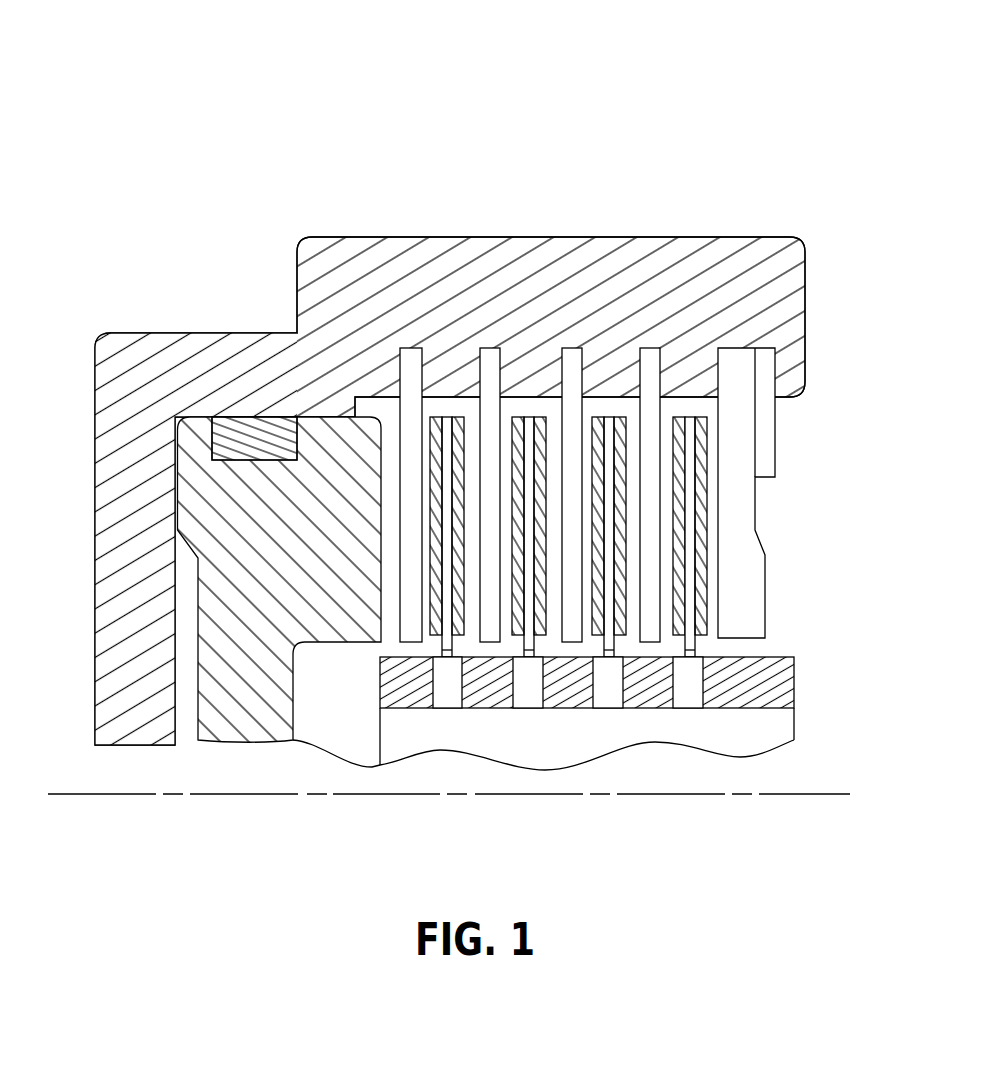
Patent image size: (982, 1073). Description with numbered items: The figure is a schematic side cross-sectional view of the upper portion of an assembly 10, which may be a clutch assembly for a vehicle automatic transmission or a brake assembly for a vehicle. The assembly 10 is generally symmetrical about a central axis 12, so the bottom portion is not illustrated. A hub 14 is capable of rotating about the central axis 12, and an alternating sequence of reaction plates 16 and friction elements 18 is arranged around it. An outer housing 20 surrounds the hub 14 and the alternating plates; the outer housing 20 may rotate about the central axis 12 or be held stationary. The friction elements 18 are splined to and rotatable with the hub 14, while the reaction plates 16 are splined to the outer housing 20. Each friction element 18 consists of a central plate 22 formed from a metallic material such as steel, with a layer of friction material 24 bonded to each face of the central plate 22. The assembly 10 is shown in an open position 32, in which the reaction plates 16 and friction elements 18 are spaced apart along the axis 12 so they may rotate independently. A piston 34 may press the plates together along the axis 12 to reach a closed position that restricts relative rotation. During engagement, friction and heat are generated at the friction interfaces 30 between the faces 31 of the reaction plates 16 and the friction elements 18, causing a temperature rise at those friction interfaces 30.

The assembly 10 is at (742, 134).
The central axis 12 is at (778, 795).
The hub 14 is at (763, 682).
The reaction plates 16 is at (412, 432).
The friction elements 18 is at (528, 440).
The outer housing 20 is at (752, 277).
The central plate 22 is at (687, 458).
The layer of friction material 24 is at (700, 565).
The friction interfaces 30 is at (434, 468).
The faces 31 is at (422, 460).
The open position 32 is at (790, 150).
The piston 34 is at (213, 523).